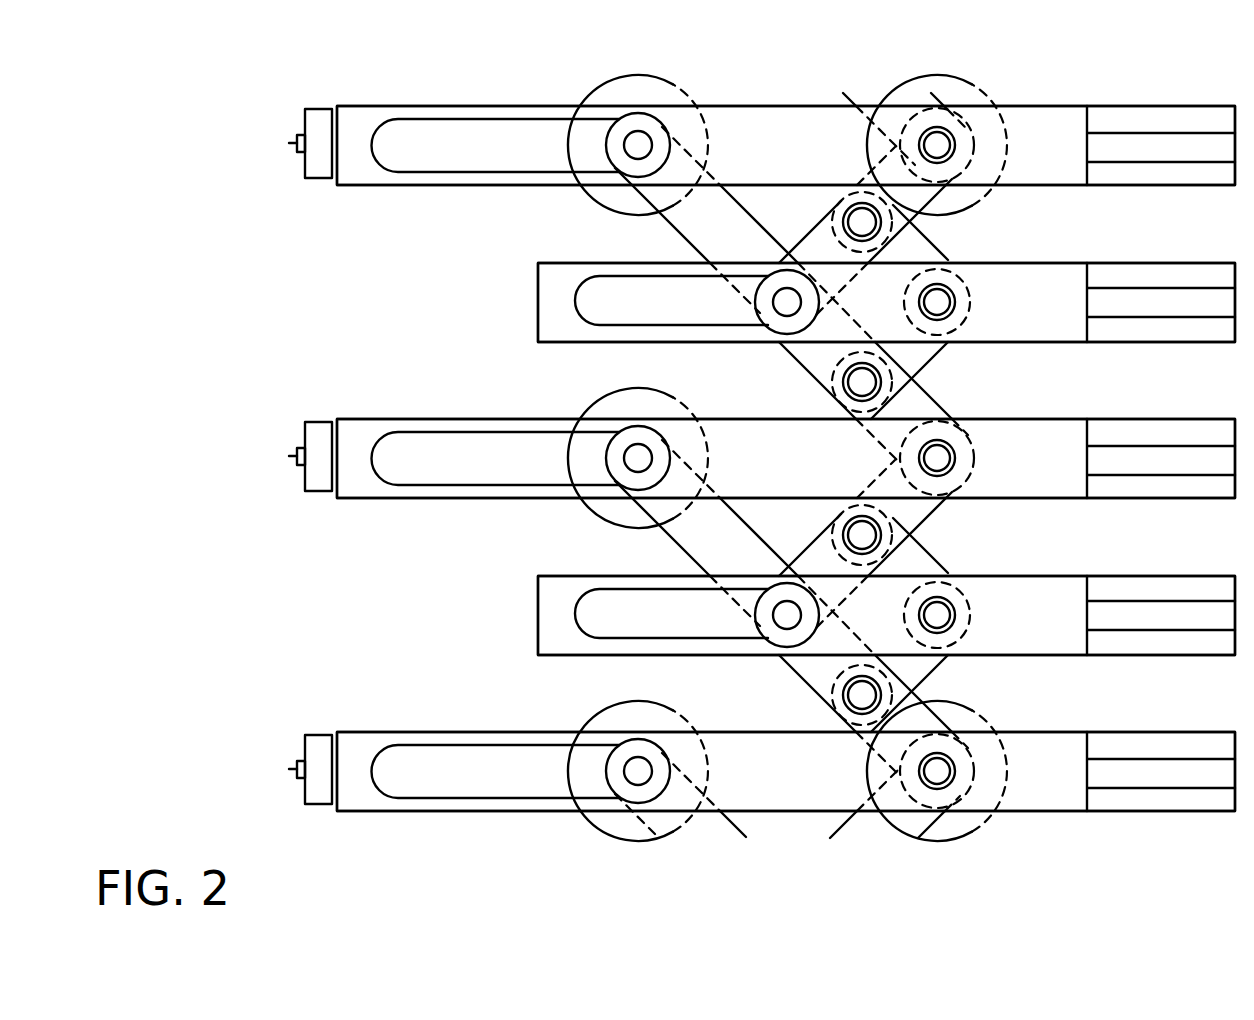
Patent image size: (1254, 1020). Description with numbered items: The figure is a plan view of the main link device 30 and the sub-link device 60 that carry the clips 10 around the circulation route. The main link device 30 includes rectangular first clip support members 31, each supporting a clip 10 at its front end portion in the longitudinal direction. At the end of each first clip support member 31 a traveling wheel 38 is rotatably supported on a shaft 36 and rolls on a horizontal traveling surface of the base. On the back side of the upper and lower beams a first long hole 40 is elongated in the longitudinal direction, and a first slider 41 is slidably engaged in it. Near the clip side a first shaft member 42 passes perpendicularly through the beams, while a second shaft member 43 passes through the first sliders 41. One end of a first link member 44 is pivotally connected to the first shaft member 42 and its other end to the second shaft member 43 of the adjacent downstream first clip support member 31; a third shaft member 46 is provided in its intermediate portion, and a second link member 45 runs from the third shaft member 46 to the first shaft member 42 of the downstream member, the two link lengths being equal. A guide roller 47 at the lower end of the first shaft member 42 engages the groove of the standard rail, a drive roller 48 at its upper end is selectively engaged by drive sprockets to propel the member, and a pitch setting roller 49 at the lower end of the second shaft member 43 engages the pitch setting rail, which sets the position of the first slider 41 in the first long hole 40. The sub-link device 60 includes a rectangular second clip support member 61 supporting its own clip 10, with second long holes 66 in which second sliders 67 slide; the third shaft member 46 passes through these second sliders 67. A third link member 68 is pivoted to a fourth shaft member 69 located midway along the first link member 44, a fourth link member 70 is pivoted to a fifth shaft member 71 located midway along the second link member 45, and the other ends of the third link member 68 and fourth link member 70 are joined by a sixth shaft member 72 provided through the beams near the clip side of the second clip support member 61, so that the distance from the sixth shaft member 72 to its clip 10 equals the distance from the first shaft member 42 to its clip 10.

The clip 10 is at (1148, 93).
The main link device 30 is at (1063, 93).
The first clip support member 31 is at (360, 204).
The shaft 36 is at (297, 142).
The traveling wheel 38 is at (322, 179).
The first long hole 40 is at (432, 128).
The first slider 41 is at (618, 138).
The first shaft member 42 is at (928, 140).
The second shaft member 43 is at (645, 142).
The first link member 44 is at (690, 244).
The second link member 45 is at (820, 246).
The third shaft member 46 is at (782, 316).
The guide roller 47 is at (968, 90).
The drive roller 48 is at (940, 91).
The pitch setting roller 49 is at (637, 76).
The sub-link device 60 is at (1063, 255).
The second clip support member 61 is at (553, 317).
The second long hole 66 is at (588, 296).
The second slider 67 is at (757, 306).
The third link member 68 is at (920, 353).
The fourth shaft member 69 is at (845, 385).
The fourth link member 70 is at (917, 250).
The fifth shaft member 71 is at (872, 219).
The sixth shaft member 72 is at (950, 290).